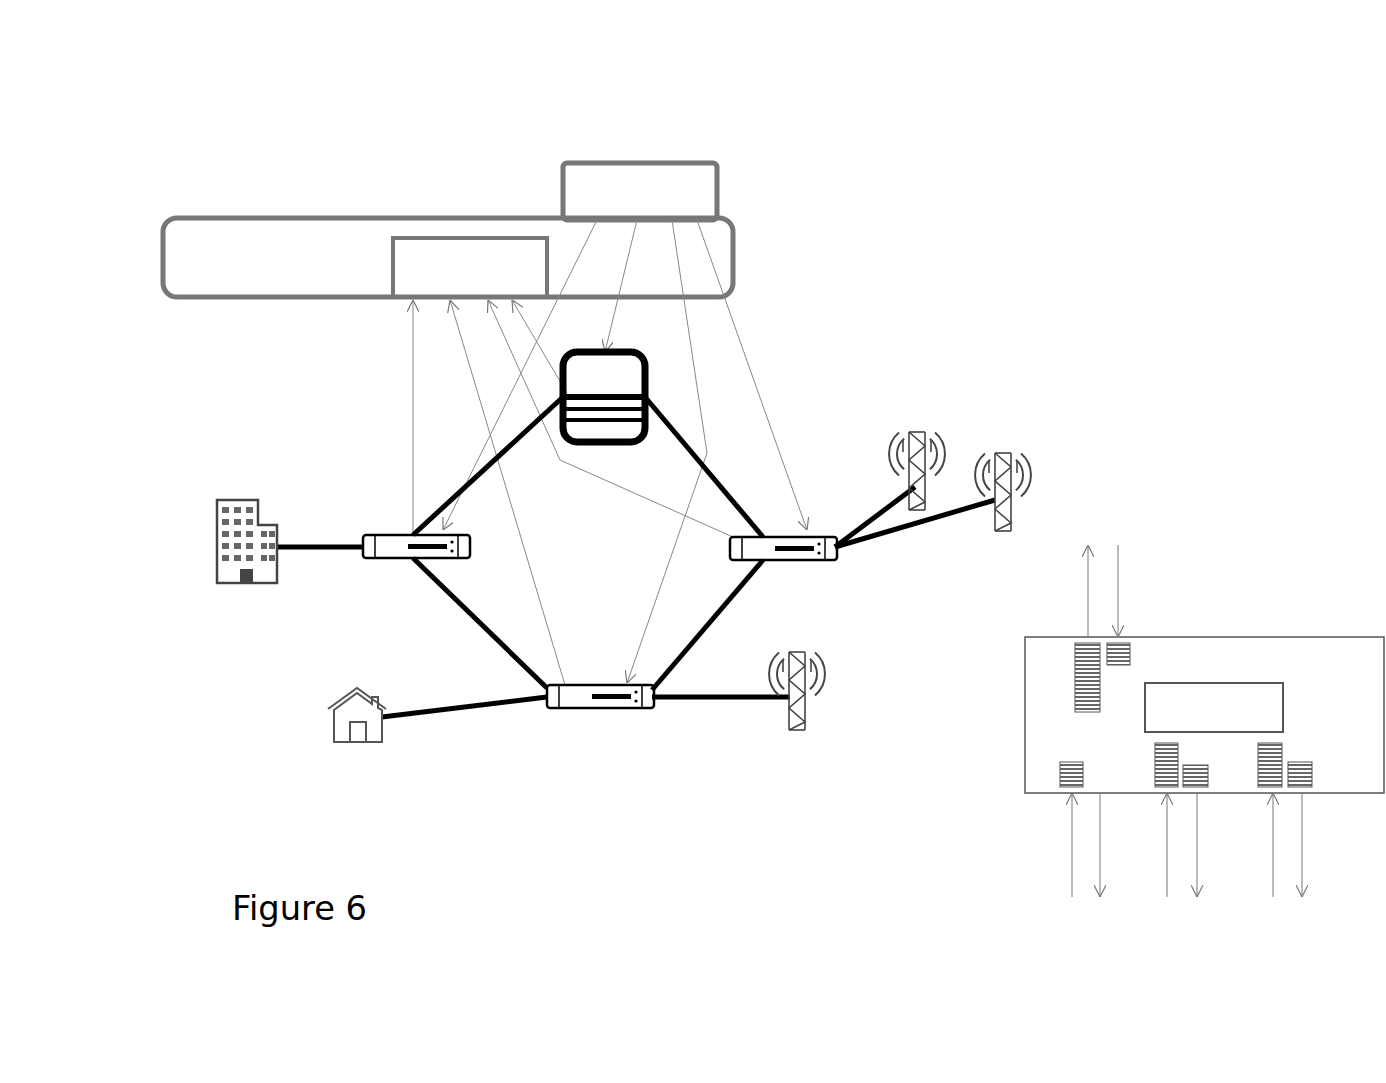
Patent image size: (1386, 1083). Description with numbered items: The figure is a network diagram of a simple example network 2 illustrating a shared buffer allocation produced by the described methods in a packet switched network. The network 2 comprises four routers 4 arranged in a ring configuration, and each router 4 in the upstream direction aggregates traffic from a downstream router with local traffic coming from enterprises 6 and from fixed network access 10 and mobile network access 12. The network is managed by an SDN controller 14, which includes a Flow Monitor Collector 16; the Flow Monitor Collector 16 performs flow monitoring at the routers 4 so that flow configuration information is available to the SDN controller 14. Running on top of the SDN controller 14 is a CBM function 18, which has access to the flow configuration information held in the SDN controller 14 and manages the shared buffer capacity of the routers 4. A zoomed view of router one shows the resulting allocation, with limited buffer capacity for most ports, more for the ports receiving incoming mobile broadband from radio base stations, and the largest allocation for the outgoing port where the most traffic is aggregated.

The network 2 is at (960, 105).
The router 4 is at (386, 525).
The enterprise 6 is at (231, 487).
The fixed network access 10 is at (348, 762).
The mobile network access 12 is at (993, 402).
The SDN controller 14 is at (363, 212).
The Flow Monitor Collector 16 is at (476, 234).
The CBM function 18 is at (635, 160).